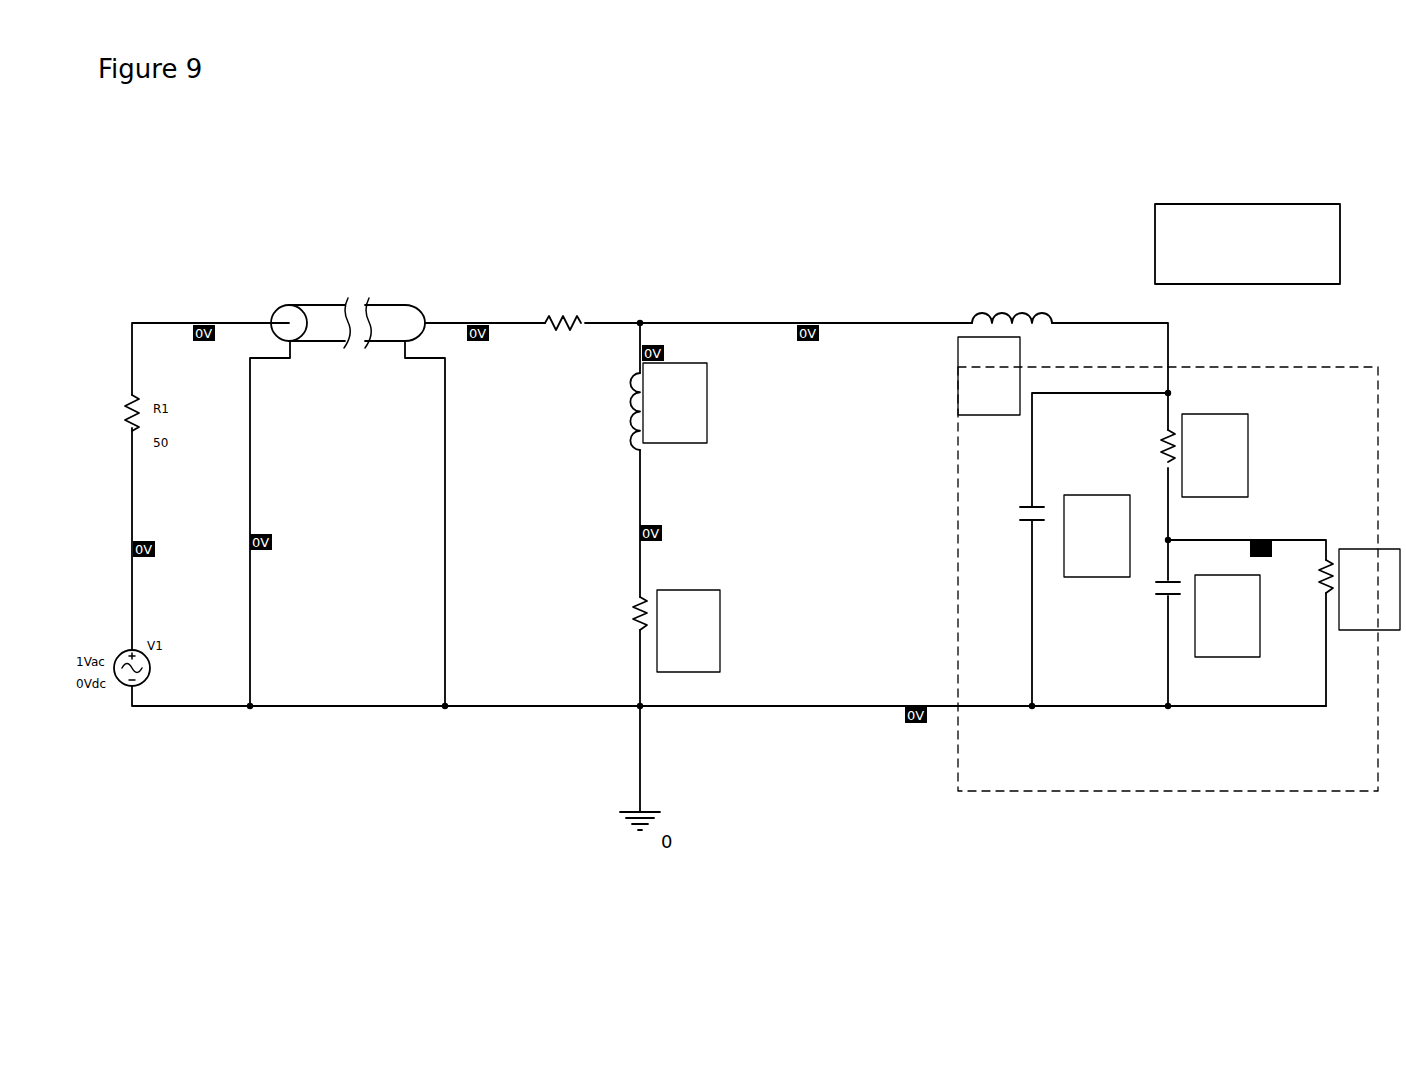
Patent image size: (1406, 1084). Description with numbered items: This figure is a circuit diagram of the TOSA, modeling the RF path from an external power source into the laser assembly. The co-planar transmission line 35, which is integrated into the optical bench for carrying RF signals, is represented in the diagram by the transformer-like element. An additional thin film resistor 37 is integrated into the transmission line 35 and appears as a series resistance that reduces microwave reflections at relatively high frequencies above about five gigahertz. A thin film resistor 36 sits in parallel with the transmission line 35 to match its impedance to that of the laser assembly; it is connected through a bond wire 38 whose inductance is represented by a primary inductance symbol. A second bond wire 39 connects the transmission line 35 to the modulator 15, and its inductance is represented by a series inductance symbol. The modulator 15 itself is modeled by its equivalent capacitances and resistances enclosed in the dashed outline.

The modulator 15 is at (1122, 800).
The co-planar transmission line 35 is at (329, 288).
The thin film resistor 36 is at (606, 598).
The additional thin film resistor 37 is at (598, 263).
The bond wire 38 is at (594, 436).
The bond wire 39 is at (1031, 260).